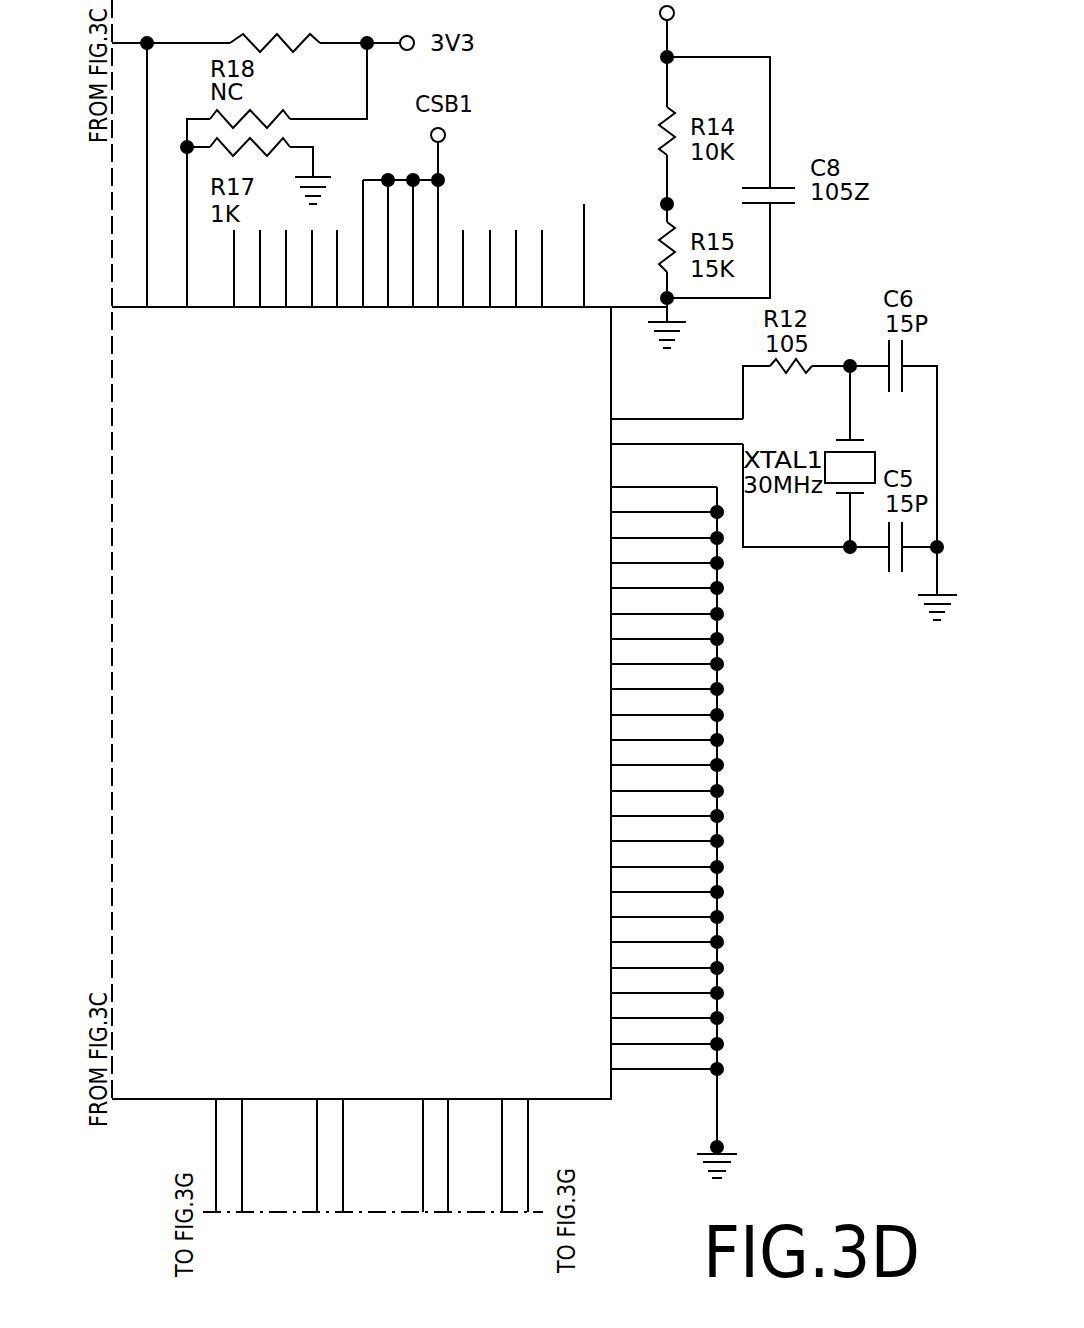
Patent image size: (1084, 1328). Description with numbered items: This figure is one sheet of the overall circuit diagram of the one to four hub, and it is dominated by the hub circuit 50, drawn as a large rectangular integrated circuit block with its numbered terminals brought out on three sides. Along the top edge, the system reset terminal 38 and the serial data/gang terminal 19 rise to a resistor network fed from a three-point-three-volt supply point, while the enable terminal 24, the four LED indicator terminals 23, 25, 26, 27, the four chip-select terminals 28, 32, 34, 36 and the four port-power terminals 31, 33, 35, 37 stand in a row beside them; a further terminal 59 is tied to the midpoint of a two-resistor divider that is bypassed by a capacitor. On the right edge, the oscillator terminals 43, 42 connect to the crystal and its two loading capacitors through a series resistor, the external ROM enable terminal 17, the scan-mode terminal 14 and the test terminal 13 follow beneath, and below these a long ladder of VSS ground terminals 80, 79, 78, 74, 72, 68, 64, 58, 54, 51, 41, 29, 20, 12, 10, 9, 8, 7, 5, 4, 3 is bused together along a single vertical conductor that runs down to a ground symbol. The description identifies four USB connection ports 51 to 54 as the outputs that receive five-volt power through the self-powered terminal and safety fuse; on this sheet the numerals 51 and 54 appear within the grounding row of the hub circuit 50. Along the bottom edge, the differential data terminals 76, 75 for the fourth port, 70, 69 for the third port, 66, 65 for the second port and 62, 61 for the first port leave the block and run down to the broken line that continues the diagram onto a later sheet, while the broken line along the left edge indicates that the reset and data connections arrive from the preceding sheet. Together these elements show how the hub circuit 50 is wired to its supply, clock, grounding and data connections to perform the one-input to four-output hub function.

The hub circuit 50 is at (130, 500).
The SYSRSTB pin 38 is at (141, 235).
The SDA/GANG pin 19 is at (181, 283).
The GEEEN pin 24 is at (228, 313).
The LED4 pin 23 is at (254, 305).
The LED3 pin 25 is at (280, 305).
The LED2 pin 26 is at (306, 305).
The LED1 pin 27 is at (331, 305).
The CSB4 pin 28 is at (357, 281).
The CSB3 pin 32 is at (382, 281).
The CSB2 pin 34 is at (407, 281).
The CSB1 pin 36 is at (432, 262).
The PPB4 pin 31 is at (457, 306).
The PPB3 pin 33 is at (484, 306).
The PPB2 pin 35 is at (510, 306).
The PPB1 pin 37 is at (536, 306).
The pin 59 is at (612, 255).
The X2 pin 43 is at (654, 414).
The X1_CLK pin 42 is at (624, 439).
The EXROM_EN pin 17 is at (592, 481).
The SCAN_MODE pin 14 is at (586, 506).
The TEST pin 13 is at (630, 532).
The VSS pin 80 is at (637, 557).
The VSS pin 79 is at (637, 582).
The VSS pin 78 is at (637, 608).
The VSS pin 74 is at (637, 633).
The VSS pin 72 is at (637, 658).
The VSS pin 68 is at (637, 683).
The VSS pin 64 is at (637, 709).
The VSS pin 58 is at (637, 734).
The USB connection port 54 is at (637, 759).
The USB connection port 51 is at (637, 785).
The VSS pin 41 is at (637, 810).
The VSS pin 29 is at (637, 835).
The VSS pin 20 is at (637, 861).
The VSS pin 12 is at (637, 886).
The VSS pin 10 is at (637, 911).
The VSS pin 9 is at (637, 937).
The VSS pin 8 is at (637, 962).
The VSS pin 7 is at (637, 987).
The VSS pin 5 is at (637, 1013).
The VSS pin 4 is at (637, 1038).
The VSS pin 3 is at (637, 1063).
The DP4 pin 76 is at (209, 1129).
The DM4 pin 75 is at (235, 1126).
The DP3 pin 70 is at (310, 1129).
The DM3 pin 69 is at (336, 1126).
The DP2 pin 66 is at (416, 1129).
The DM2 pin 65 is at (441, 1126).
The DP1 pin 62 is at (495, 1129).
The DM1 pin 61 is at (521, 1126).